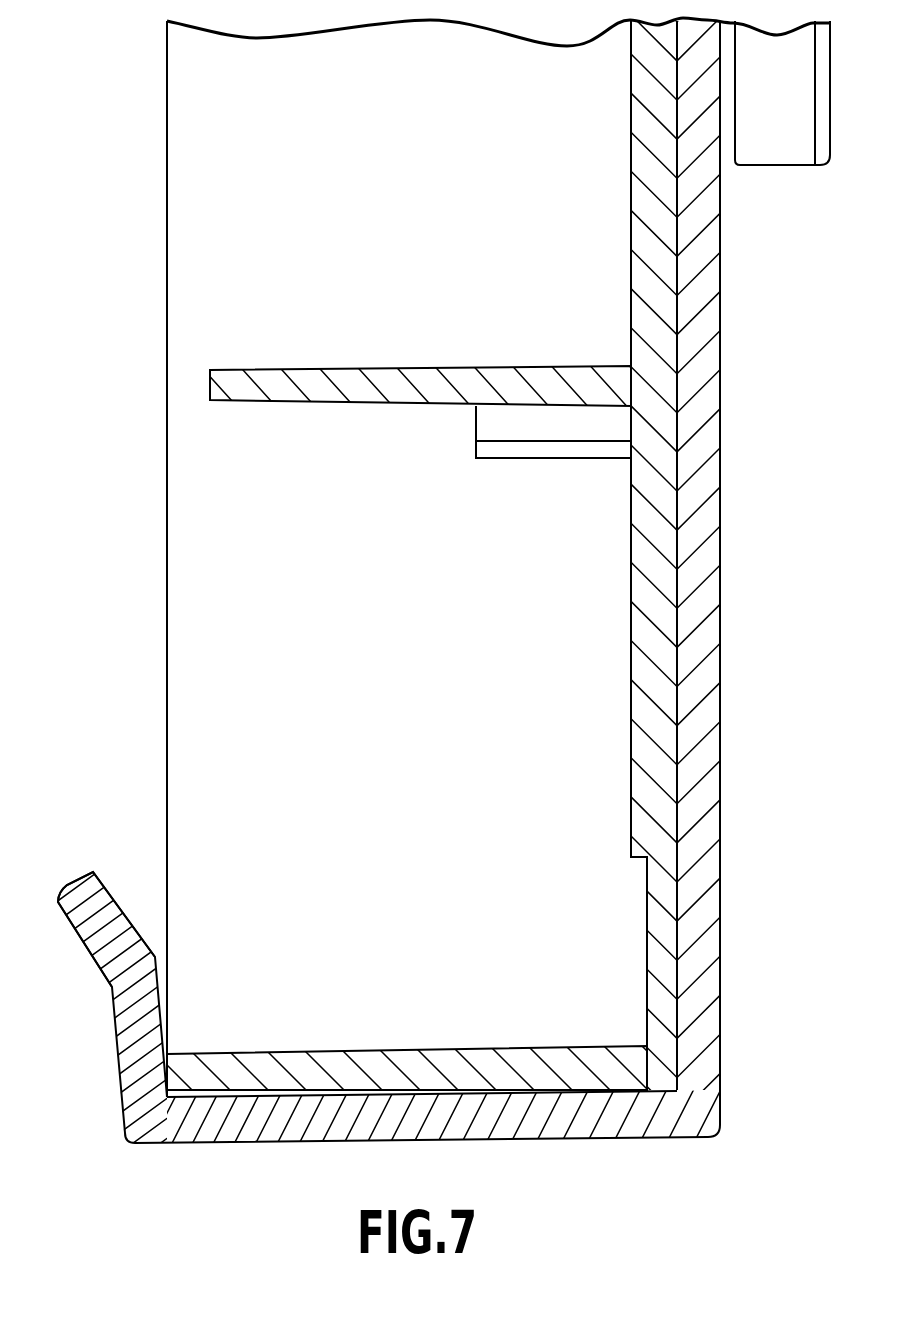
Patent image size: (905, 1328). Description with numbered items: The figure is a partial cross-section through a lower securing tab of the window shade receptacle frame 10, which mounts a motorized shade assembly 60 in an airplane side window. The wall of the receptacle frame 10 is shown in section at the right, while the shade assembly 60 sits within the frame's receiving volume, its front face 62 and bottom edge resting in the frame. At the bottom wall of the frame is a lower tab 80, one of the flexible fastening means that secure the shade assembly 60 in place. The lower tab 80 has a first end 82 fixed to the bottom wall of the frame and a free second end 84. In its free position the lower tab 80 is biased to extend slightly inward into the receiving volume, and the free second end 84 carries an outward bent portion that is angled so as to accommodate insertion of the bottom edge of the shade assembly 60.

The receptacle frame 10 is at (720, 670).
The motorized shade assembly 60 is at (142, 626).
The front face 62 is at (167, 998).
The lower tab 80 is at (104, 1032).
The first end 82 is at (122, 1125).
The free second end 84 is at (72, 875).